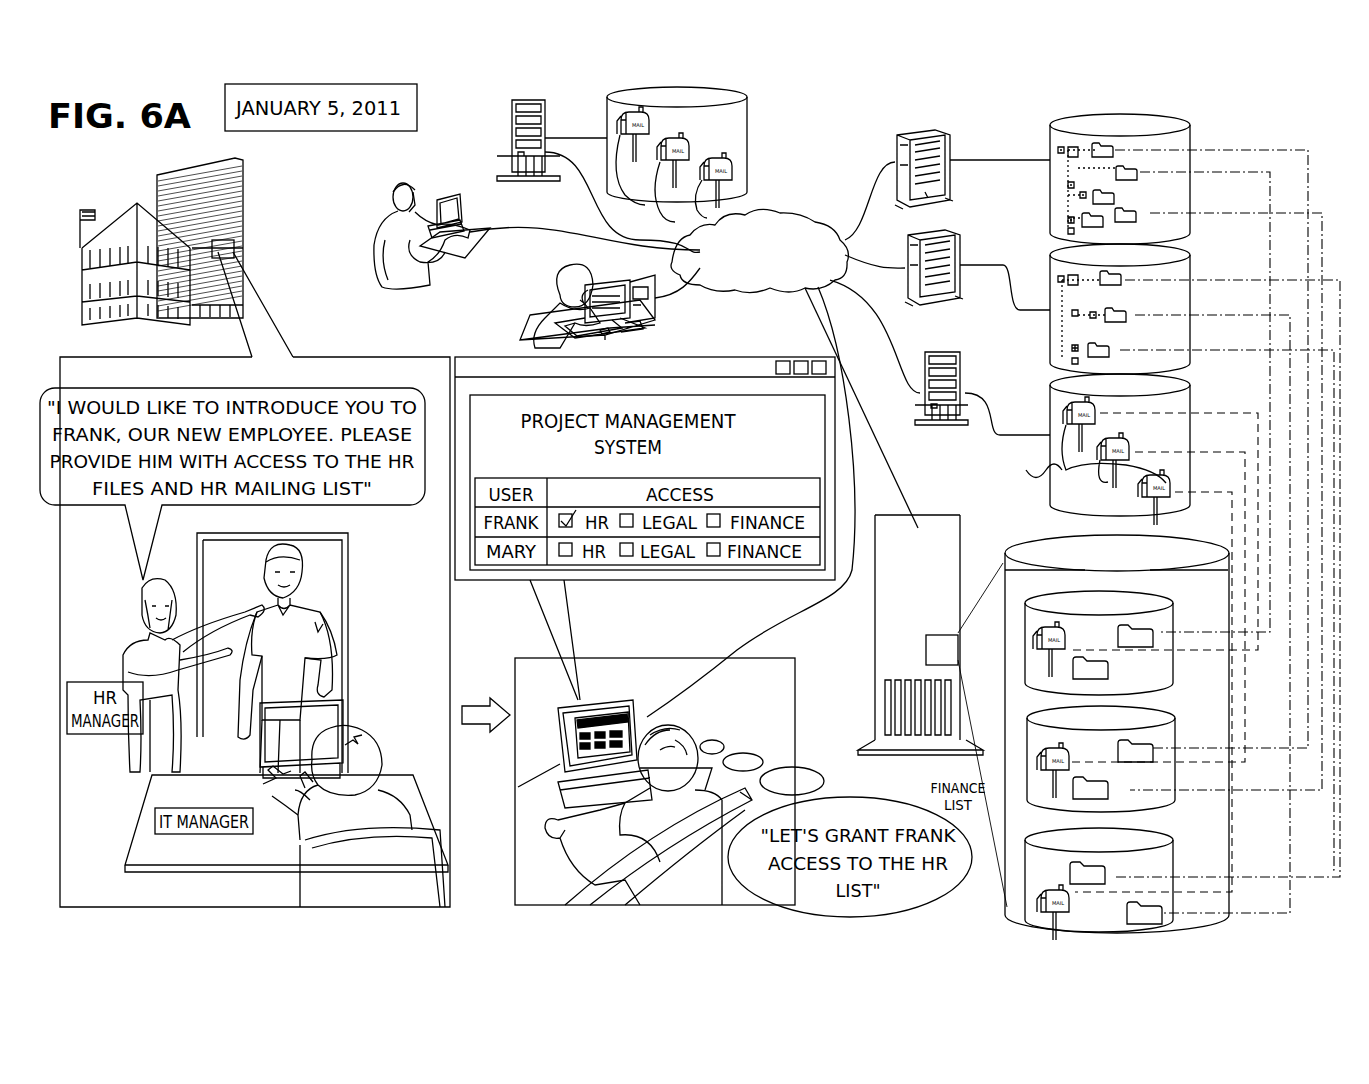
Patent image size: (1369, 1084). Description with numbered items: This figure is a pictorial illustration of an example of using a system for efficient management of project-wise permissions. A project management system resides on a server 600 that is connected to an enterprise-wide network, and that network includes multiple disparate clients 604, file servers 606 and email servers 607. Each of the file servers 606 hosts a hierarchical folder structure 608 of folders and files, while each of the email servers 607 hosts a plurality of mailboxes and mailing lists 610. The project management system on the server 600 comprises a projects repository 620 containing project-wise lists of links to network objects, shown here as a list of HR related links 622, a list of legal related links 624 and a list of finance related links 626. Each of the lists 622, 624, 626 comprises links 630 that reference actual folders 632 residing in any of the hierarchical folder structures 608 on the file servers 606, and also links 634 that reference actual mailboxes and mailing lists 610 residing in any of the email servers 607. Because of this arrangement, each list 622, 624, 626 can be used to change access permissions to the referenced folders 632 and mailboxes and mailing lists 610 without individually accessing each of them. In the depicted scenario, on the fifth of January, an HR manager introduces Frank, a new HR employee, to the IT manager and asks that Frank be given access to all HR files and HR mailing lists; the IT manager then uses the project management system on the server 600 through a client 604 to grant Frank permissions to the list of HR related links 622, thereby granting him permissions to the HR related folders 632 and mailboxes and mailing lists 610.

The server 600 is at (944, 515).
The clients 604 is at (328, 716).
The file servers 606 is at (950, 165).
The email servers 607 is at (512, 118).
The hierarchical folder structure 608 is at (926, 306).
The mailboxes and mailing lists 610 is at (888, 306).
The projects repository 620 is at (1015, 560).
The list of HR related links 622 is at (1161, 598).
The list of legal related links 624 is at (1161, 713).
The list of finance related links 626 is at (1155, 835).
The links 630 is at (1150, 634).
The actual folders 632 is at (1124, 213).
The links 634 is at (1034, 638).